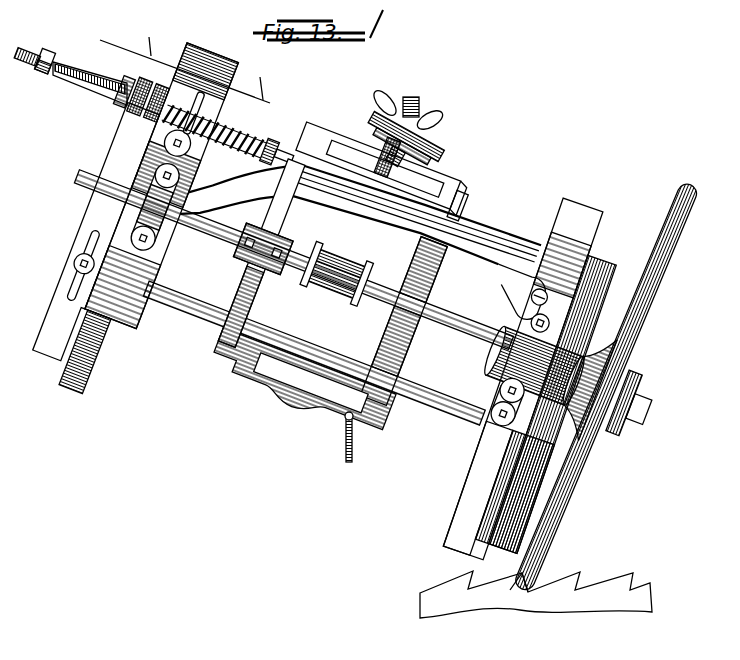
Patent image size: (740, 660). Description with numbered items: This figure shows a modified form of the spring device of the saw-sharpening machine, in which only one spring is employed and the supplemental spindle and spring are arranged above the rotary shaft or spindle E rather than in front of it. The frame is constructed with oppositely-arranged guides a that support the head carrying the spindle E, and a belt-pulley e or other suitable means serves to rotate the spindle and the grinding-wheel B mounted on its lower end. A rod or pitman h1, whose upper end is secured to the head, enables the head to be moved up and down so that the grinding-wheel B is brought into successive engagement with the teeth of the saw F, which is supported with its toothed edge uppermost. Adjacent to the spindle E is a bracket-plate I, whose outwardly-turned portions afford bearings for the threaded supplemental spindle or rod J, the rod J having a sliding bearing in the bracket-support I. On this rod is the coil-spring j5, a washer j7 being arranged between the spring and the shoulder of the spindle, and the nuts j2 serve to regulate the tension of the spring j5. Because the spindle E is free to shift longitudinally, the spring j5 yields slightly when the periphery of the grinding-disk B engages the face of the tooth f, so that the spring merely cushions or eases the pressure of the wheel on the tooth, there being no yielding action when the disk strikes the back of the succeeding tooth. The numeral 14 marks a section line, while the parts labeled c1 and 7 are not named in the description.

The guides a is at (97, 350).
The supplemental spindle J is at (78, 83).
The bracket-plate I is at (78, 83).
The section line 14 is at (196, 76).
The nuts j2 is at (140, 118).
The coil-spring j5 is at (200, 152).
The washer j7 is at (266, 140).
The upright bar c1 is at (287, 193).
The rotary shaft or spindle E is at (383, 303).
The belt-pulley e is at (337, 263).
The bearing plate 7 is at (593, 228).
The grinding-wheel B is at (653, 293).
The rod or pitman h1 is at (343, 435).
The saw F is at (557, 600).
The tooth f is at (517, 580).